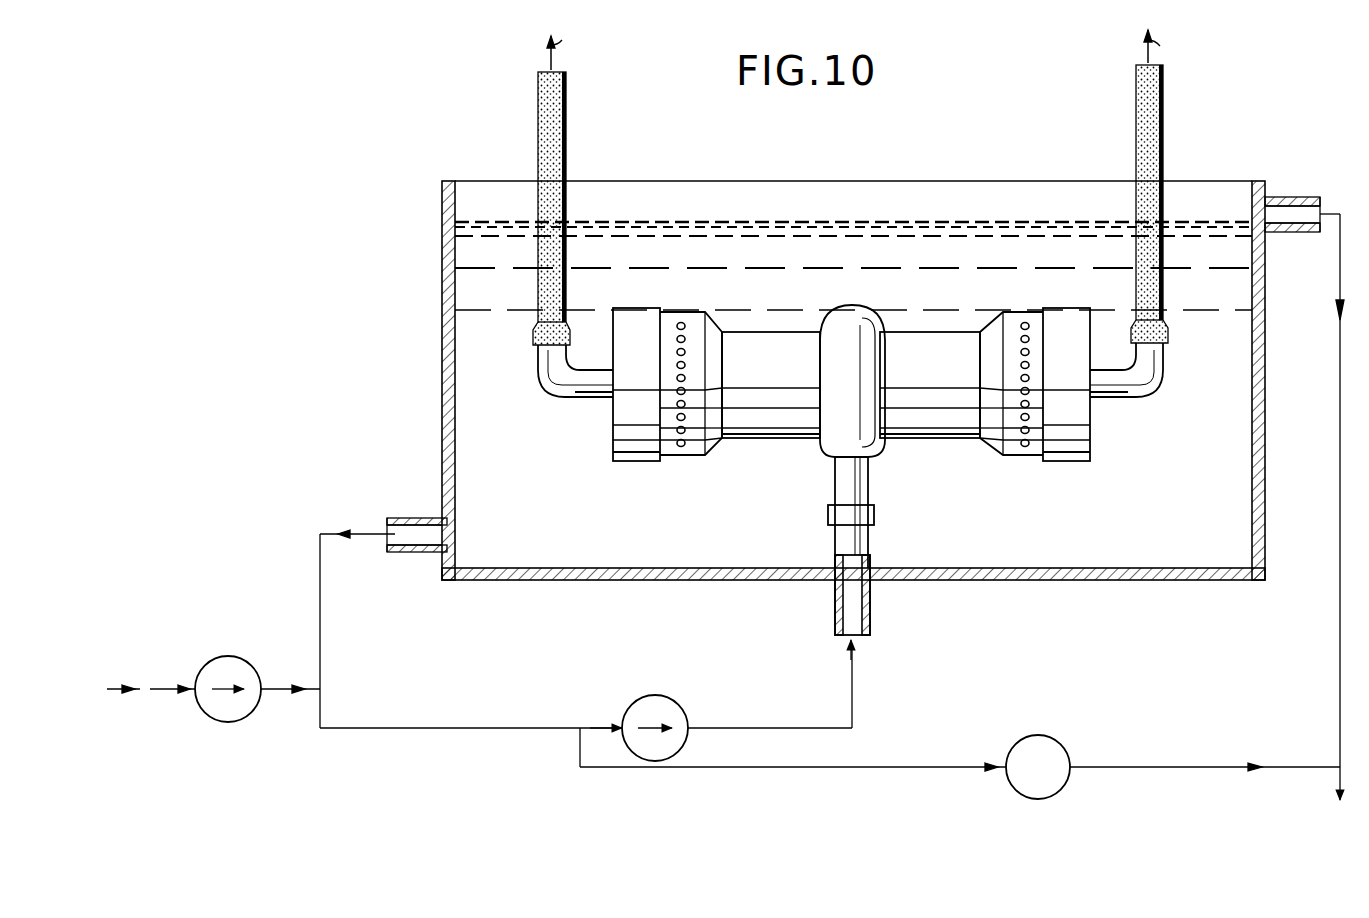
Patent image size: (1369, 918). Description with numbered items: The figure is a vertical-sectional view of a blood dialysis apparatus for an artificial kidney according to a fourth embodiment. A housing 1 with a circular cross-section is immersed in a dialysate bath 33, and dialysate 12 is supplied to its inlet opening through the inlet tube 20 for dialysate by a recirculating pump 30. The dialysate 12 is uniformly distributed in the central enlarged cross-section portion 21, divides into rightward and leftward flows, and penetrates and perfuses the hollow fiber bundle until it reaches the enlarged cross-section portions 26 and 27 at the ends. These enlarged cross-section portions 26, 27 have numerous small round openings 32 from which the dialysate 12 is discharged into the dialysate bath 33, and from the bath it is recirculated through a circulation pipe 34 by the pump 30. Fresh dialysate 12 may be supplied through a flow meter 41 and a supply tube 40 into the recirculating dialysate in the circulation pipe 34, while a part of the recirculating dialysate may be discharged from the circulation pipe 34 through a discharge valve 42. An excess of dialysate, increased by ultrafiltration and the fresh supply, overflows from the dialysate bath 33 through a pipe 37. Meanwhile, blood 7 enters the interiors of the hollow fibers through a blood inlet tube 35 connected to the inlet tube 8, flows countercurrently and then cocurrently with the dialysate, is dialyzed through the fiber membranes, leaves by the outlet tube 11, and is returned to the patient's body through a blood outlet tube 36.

The housing 1 is at (925, 332).
The blood 7 is at (861, 50).
The inlet tube 8 is at (586, 382).
The outlet tube 11 is at (1136, 382).
The dialysate 12 is at (1222, 330).
The inlet tube for dialysate 20 is at (862, 480).
The central enlarged cross-section portion 21 is at (848, 330).
The enlarged cross-section portion 26 is at (700, 440).
The enlarged cross-section portion 27 is at (1012, 458).
The recirculating pump 30 is at (668, 706).
The small round openings 32 is at (681, 318).
The dialysate bath 33 is at (1265, 388).
The circulation pipe 34 is at (320, 628).
The blood inlet tube 35 is at (566, 110).
The blood outlet tube 36 is at (1165, 110).
The pipe 37 is at (1296, 232).
The supply tube 40 is at (284, 692).
The flow meter 41 is at (228, 722).
The discharge valve 42 is at (1045, 730).